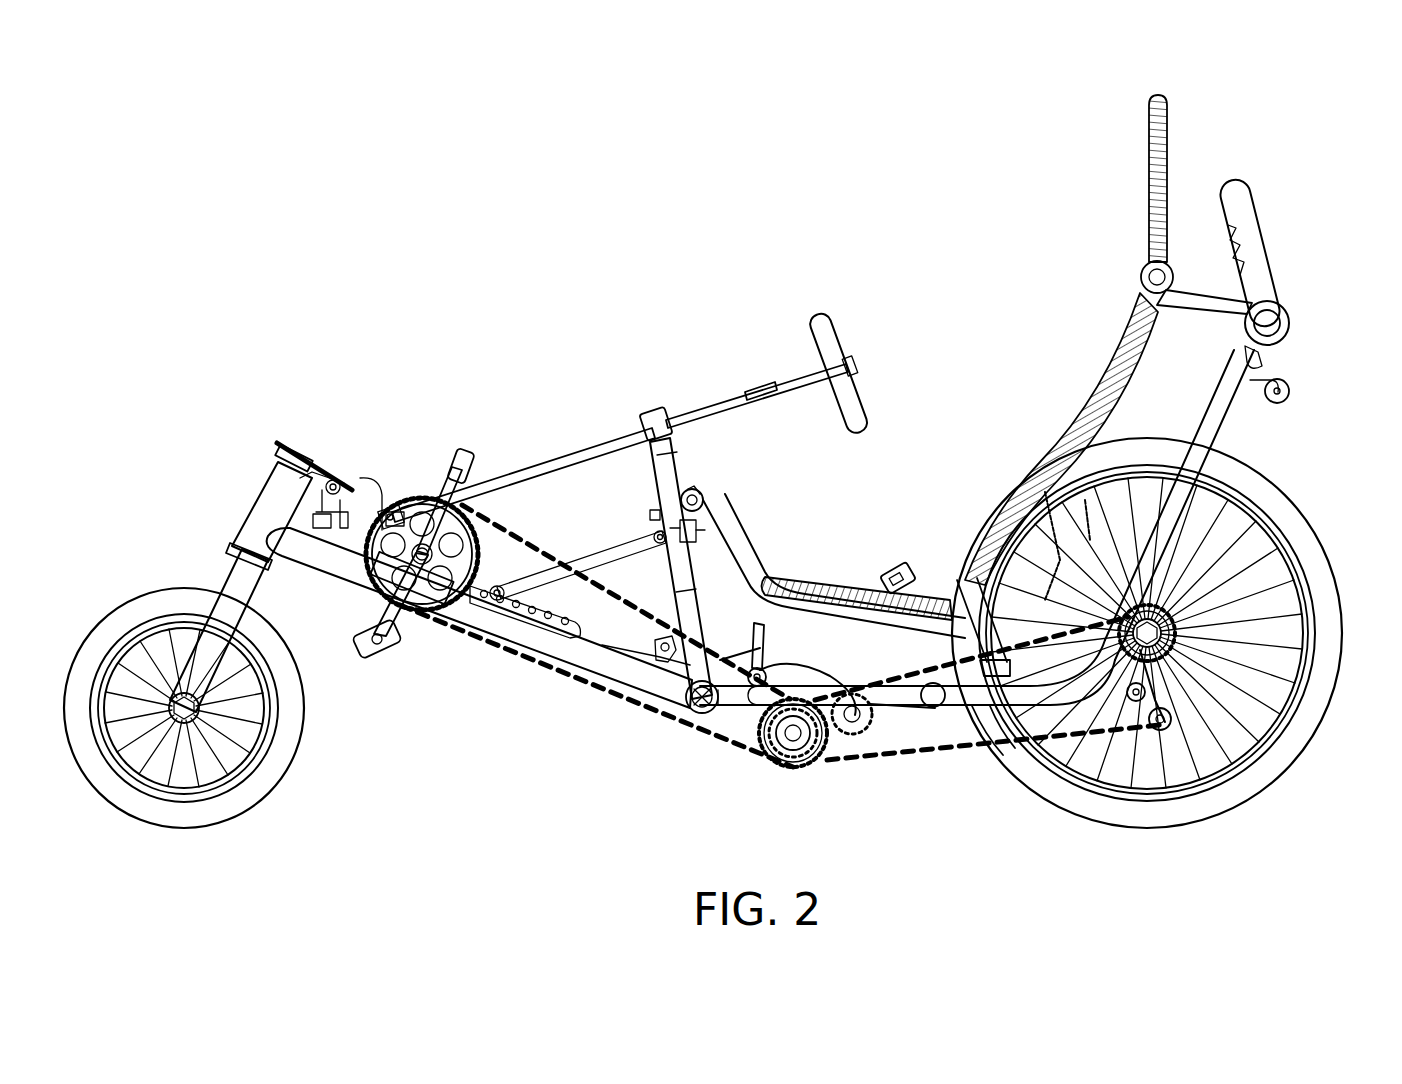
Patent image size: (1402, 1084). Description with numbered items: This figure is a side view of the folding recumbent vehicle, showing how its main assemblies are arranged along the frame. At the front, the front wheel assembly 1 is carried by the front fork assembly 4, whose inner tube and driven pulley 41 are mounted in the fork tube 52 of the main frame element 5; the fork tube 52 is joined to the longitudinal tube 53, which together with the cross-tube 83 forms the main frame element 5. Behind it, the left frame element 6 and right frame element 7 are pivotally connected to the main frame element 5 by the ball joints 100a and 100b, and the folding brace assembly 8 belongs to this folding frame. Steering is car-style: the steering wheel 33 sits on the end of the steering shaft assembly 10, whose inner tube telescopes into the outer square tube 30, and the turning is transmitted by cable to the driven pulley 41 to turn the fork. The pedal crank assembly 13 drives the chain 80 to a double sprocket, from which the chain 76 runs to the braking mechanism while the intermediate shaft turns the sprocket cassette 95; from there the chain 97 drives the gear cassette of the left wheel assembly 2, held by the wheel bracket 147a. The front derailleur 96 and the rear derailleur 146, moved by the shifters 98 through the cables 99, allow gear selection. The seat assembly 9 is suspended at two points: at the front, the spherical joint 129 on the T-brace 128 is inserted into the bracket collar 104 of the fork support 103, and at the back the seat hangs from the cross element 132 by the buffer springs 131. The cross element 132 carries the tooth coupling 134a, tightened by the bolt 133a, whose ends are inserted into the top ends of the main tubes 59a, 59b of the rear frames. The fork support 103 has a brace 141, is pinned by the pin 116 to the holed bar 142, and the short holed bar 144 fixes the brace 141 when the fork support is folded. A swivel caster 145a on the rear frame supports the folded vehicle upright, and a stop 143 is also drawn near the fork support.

The front wheel assembly 1 is at (297, 745).
The left wheel assembly 2 is at (1157, 637).
The front fork assembly 4 is at (241, 559).
The main frame element 5 is at (479, 627).
The left frame element 6 is at (1034, 591).
The right frame element 7 is at (1068, 708).
The folding brace assembly 8 is at (1237, 503).
The seat assembly 9 is at (1104, 385).
The steering shaft assembly 10 is at (781, 374).
The pedal crank assembly 13 is at (403, 478).
The outer square tube 30 is at (492, 468).
The steering wheel 33 is at (852, 395).
The driven pulley 41 is at (290, 452).
The fork tube 52 is at (277, 497).
The longitudinal tube 53 is at (481, 613).
The main tube of rear frame 59a is at (1262, 418).
The main tube of rear frame 59b is at (1306, 457).
The chain 76 is at (855, 722).
The chain 80 is at (648, 712).
The cross-tube 83 is at (923, 640).
The sprocket cassette 95 is at (793, 745).
The front derailleur 96 is at (824, 740).
The chain 97 is at (915, 750).
The shifters 98 is at (760, 668).
The cables 99 is at (842, 684).
The ball joint 100a is at (697, 713).
The ball joint 100b is at (710, 712).
The fork support 103 is at (687, 598).
The bracket collar 104 is at (700, 522).
The pin 116 is at (500, 588).
The T-brace 128 is at (733, 553).
The spherical joint 129 is at (693, 490).
The buffer springs 131 is at (1227, 245).
The cross element 132 is at (1252, 232).
The bolt 133a is at (1268, 323).
The tooth coupling 134a is at (1284, 310).
The brace 141 is at (612, 548).
The holed bar 142 is at (532, 624).
The stop 143 is at (652, 510).
The short holed bar 144 is at (628, 657).
The swivel caster 145a is at (1290, 386).
The derailleur 146 is at (1165, 720).
The wheel bracket 147a is at (1163, 600).